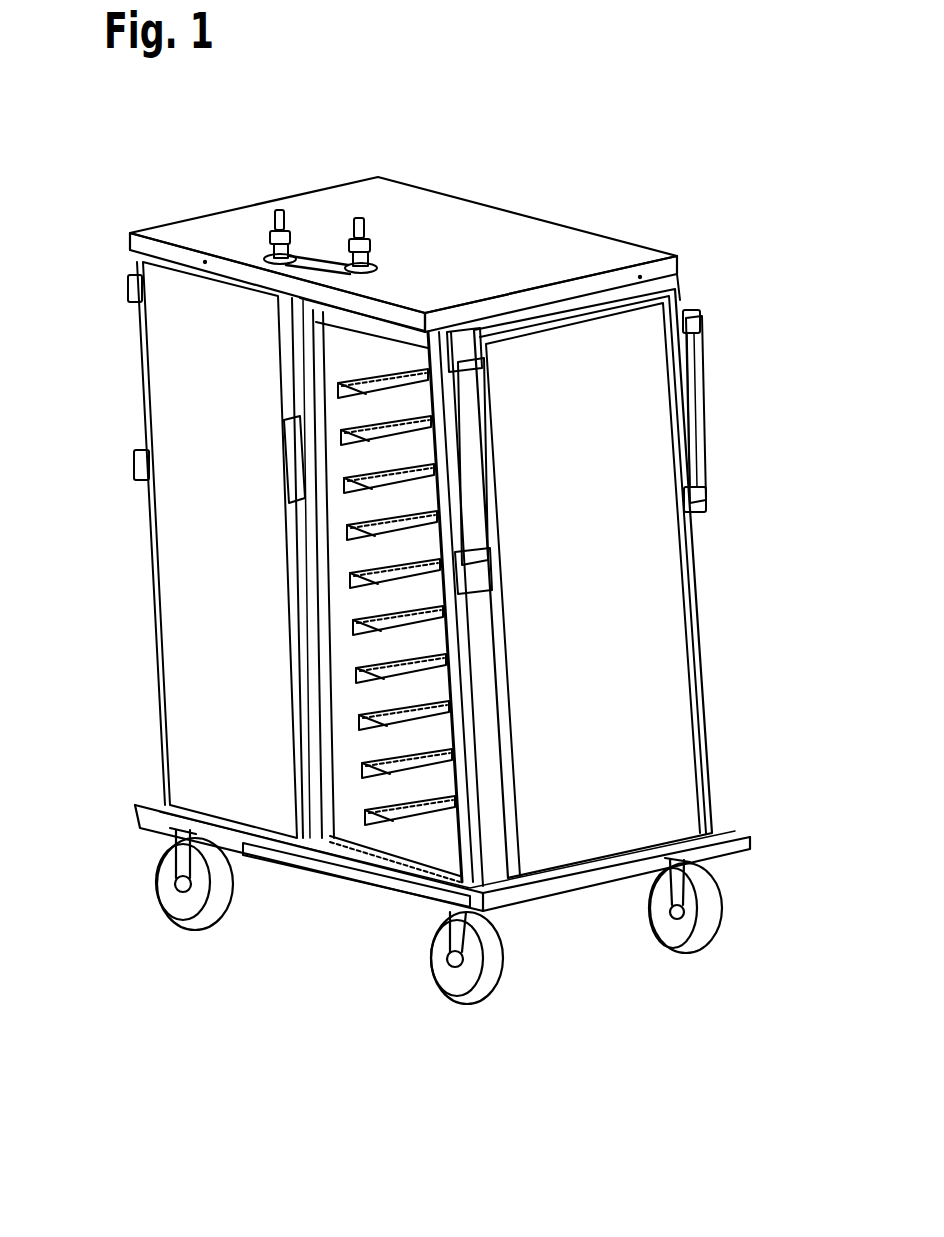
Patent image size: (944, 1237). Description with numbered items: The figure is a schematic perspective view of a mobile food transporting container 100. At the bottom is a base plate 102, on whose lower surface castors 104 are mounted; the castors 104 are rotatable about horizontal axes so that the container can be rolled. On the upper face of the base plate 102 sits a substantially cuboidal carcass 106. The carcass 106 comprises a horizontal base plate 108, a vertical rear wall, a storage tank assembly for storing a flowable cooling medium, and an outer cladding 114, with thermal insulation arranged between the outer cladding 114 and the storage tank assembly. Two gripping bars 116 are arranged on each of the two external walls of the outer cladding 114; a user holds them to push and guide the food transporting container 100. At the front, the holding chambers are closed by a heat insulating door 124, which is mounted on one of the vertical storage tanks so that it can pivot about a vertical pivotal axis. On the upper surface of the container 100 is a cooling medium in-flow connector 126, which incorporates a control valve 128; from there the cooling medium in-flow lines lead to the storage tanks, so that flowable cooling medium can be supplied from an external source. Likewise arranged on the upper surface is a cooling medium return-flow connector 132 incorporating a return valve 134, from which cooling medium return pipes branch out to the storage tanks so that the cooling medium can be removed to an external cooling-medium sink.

The mobile food transporting container 100 is at (637, 185).
The base plate 102 is at (727, 828).
The castors 104 is at (188, 903).
The carcass 106 is at (692, 291).
The horizontal base plate 108 is at (388, 857).
The outer cladding 114 is at (520, 200).
The gripping bars 116 is at (137, 362).
The heat insulating door 124 is at (183, 597).
The cooling medium in-flow connector 126 is at (297, 218).
The control valve 128 is at (268, 236).
The cooling medium return-flow connector 132 is at (375, 228).
The return valve 134 is at (366, 250).